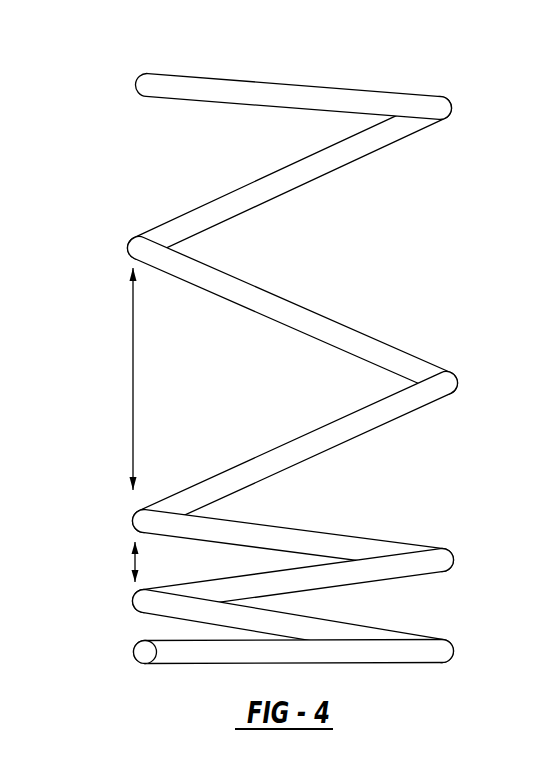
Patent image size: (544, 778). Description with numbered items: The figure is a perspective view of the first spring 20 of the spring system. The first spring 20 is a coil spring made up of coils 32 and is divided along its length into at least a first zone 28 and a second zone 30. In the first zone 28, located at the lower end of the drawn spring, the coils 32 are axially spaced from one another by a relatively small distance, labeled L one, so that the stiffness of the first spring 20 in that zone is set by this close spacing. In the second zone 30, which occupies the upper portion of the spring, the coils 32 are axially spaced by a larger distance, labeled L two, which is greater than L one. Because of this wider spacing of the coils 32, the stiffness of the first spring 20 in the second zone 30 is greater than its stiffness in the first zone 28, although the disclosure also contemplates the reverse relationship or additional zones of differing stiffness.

The first spring 20 is at (280, 349).
The first zone 28 is at (250, 588).
The second zone 30 is at (252, 304).
The coils 32 is at (293, 312).